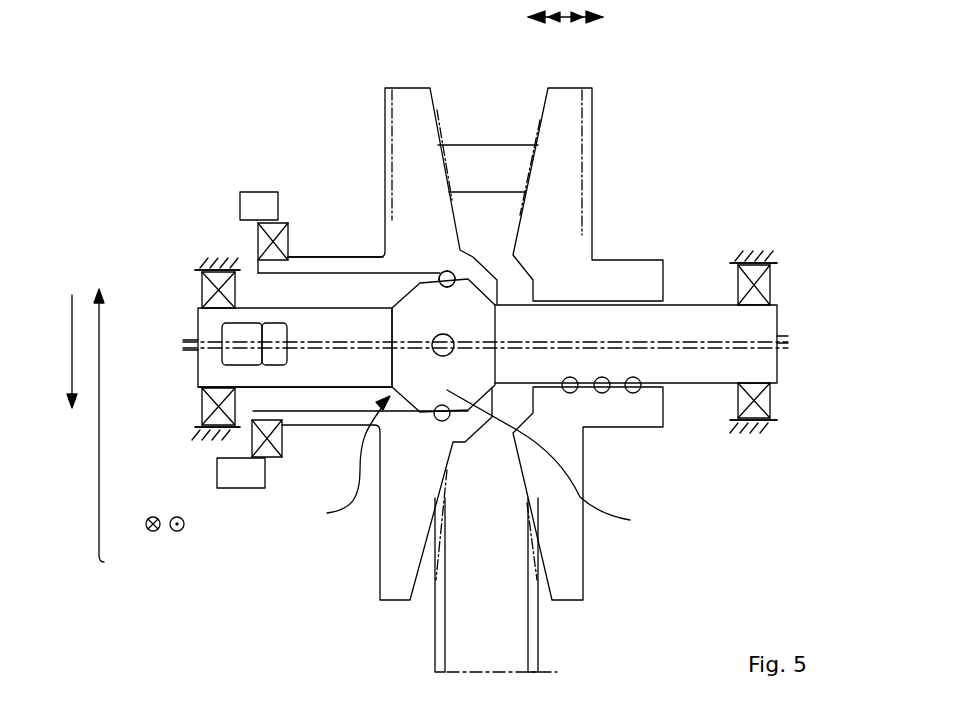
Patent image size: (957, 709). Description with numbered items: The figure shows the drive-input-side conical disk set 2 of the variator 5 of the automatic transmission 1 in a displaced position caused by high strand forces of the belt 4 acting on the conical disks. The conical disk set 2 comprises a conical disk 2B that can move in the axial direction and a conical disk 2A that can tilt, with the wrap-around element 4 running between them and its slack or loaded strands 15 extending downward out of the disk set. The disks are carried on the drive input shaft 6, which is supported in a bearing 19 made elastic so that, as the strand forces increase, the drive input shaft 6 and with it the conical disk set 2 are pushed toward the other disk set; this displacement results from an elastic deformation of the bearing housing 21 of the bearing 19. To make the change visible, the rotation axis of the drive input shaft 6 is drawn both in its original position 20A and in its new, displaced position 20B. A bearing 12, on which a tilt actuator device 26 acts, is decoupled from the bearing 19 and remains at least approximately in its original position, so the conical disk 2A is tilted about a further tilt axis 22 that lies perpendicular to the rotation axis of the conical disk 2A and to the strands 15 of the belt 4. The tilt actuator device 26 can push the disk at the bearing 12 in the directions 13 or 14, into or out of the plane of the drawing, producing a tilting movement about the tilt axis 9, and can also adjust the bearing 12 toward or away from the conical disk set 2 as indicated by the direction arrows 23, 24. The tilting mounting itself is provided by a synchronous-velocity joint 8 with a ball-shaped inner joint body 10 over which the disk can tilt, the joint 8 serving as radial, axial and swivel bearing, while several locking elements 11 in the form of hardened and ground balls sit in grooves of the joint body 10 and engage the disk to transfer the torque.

The automatic transmission 1 is at (134, 90).
The conical disk set 2 is at (422, 313).
The conical disk 2A is at (383, 83).
The conical disk 2B is at (570, 107).
The wrap-around element 4 is at (488, 163).
The variator 5 is at (786, 141).
The drive input shaft 6 is at (703, 312).
The synchronous-velocity joint 8 is at (351, 464).
The tilt axis 9 is at (443, 372).
The joint body 10 is at (553, 466).
The locking elements 11 is at (441, 271).
The bearing 12 is at (293, 240).
The direction 13 is at (158, 532).
The direction 14 is at (185, 527).
The slack or loaded strand 15 is at (470, 653).
The bearing 19 is at (180, 247).
The original position 20A is at (186, 340).
The displaced position 20B is at (186, 352).
The bearing housing 21 is at (207, 445).
The further tilt axis 22 is at (452, 352).
The direction arrow 23 is at (72, 295).
The direction arrow 24 is at (108, 435).
The tilt actuator device 26 is at (240, 203).